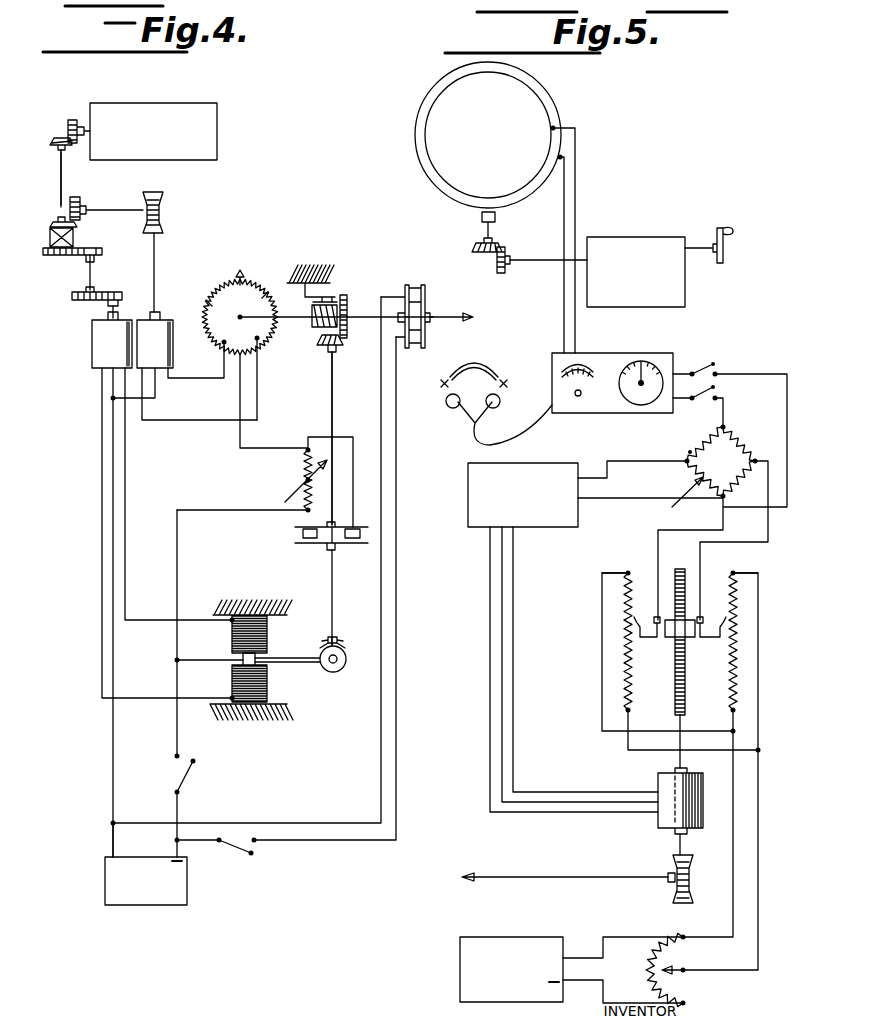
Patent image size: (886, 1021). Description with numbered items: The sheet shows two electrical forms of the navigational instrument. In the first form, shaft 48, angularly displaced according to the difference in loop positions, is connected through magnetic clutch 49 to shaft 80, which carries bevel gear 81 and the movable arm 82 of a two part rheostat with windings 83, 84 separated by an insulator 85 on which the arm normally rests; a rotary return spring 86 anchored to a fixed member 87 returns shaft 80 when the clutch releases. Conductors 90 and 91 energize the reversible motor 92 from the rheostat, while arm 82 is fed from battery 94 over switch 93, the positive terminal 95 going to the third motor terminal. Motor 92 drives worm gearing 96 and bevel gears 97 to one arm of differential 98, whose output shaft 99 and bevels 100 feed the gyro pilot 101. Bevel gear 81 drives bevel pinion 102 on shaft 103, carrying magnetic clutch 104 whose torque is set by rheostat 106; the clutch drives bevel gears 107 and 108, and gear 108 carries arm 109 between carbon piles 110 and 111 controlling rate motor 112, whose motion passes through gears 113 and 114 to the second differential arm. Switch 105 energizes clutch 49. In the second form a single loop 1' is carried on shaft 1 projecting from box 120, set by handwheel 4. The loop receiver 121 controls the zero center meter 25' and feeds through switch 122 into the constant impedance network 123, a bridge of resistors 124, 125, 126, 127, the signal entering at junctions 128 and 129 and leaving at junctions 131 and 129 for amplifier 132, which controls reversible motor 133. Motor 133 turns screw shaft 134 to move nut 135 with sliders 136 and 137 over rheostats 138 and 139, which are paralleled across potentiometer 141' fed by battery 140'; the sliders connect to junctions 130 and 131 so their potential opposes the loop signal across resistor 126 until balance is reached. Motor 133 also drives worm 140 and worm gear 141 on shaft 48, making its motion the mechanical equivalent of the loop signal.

In FIG. 4, the bevels 100 is at (66, 138).
In FIG. 4, the gyro pilot 101 is at (153, 131).
In FIG. 4, the shaft 99 is at (58, 183).
In FIG. 4, the bevel gears 97 is at (80, 225).
In FIG. 4, the differential 98 is at (50, 238).
In FIG. 4, the gear 114 is at (102, 254).
In FIG. 4, the gear 113 is at (100, 288).
In FIG. 4, the rate motor 112 is at (112, 340).
In FIG. 4, the reversible motor 92 is at (155, 340).
In FIG. 4, the worm and worm gear 96 is at (163, 210).
In FIG. 4, the conductor 91 is at (224, 357).
In FIG. 4, the movable arm 82 is at (274, 317).
In FIG. 4, the rheostat winding 84 is at (214, 298).
In FIG. 4, the rheostat winding 83 is at (266, 285).
In FIG. 4, the insulator 85 is at (241, 270).
In FIG. 4, the rotary return spring 86 is at (318, 328).
In FIG. 4, the bevel gear 81 is at (347, 297).
In FIG. 4, the fixed member 87 is at (318, 265).
In FIG. 4, the shaft 80 is at (367, 316).
In FIG. 4, the bevel pinion 102 is at (338, 346).
In FIG. 4, the magnetic clutch 49 is at (400, 300).
In FIG. 4, the shaft 48 is at (450, 315).
In FIG. 5, the shaft 48 is at (527, 875).
In FIG. 4, the shaft 103 is at (338, 410).
In FIG. 4, the conductor 90 is at (257, 390).
In FIG. 4, the rheostat 106 is at (252, 480).
In FIG. 4, the magnetic clutch 104 is at (300, 536).
In FIG. 4, the carbon pile 111 is at (232, 638).
In FIG. 4, the carbon pile 110 is at (232, 683).
In FIG. 4, the arm 109 is at (297, 666).
In FIG. 4, the bevel gear 107 is at (343, 638).
In FIG. 4, the bevel gear 108 is at (341, 670).
In FIG. 4, the switch 93 is at (174, 774).
In FIG. 4, the positive terminal 95 is at (110, 843).
In FIG. 4, the battery 94 is at (146, 881).
In FIG. 4, the switch 105 is at (237, 860).
In FIG. 5, the loop 1' is at (488, 135).
In FIG. 5, the shaft 1 is at (497, 242).
In FIG. 5, the box 120 is at (636, 272).
In FIG. 5, the handwheel 4 is at (709, 232).
In FIG. 5, the loop receiver 121 is at (600, 353).
In FIG. 5, the zero center meter 25' is at (643, 363).
In FIG. 5, the switch 122 is at (707, 371).
In FIG. 5, the constant impedance non-reacting network 123 is at (742, 416).
In FIG. 5, the junction 128 is at (719, 428).
In FIG. 5, the resistor 124 is at (745, 447).
In FIG. 5, the junction 131 is at (684, 467).
In FIG. 5, the resistor 125 is at (745, 482).
In FIG. 5, the resistor 127 is at (690, 448).
In FIG. 5, the junction 130 is at (755, 461).
In FIG. 5, the resistor 126 is at (669, 499).
In FIG. 5, the junction 129 is at (723, 500).
In FIG. 5, the amplifier 132 is at (523, 495).
In FIG. 5, the nut 135 is at (647, 642).
In FIG. 5, the slider 137 is at (715, 642).
In FIG. 5, the slider 136 is at (665, 637).
In FIG. 5, the screw shaft 134 is at (684, 716).
In FIG. 5, the rheostat 138 is at (630, 608).
In FIG. 5, the rheostat 139 is at (727, 618).
In FIG. 5, the reversible motor 133 is at (660, 797).
In FIG. 5, the worm 140 is at (700, 871).
In FIG. 5, the worm gear 141 is at (652, 867).
In FIG. 5, the battery 140' is at (511, 969).
In FIG. 5, the potentiometer 141' is at (685, 969).